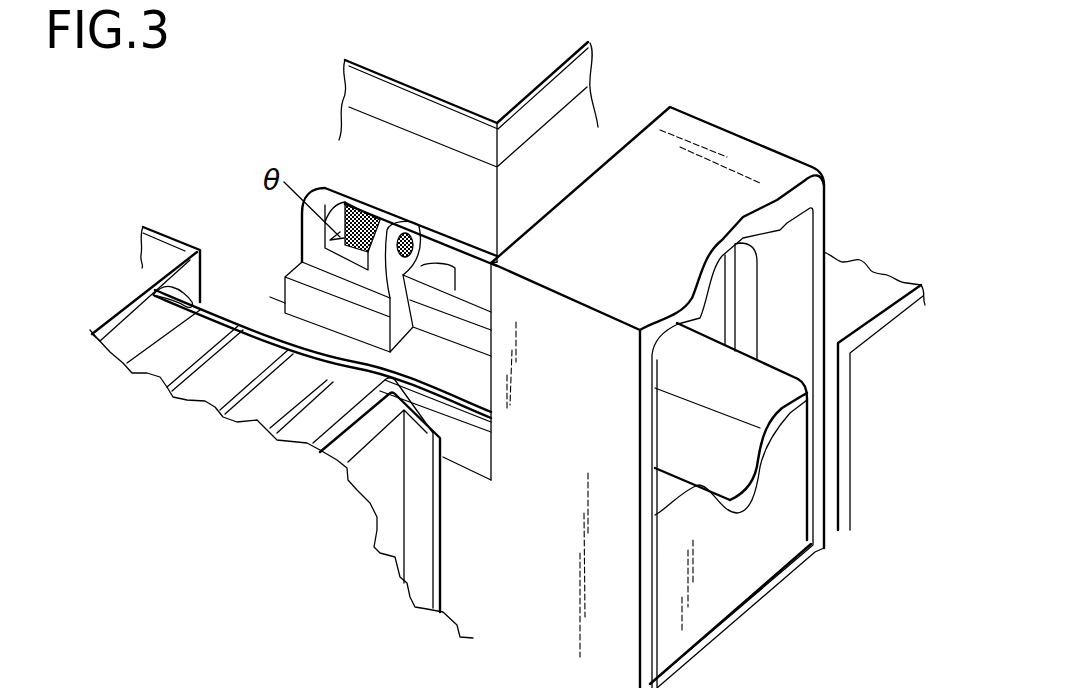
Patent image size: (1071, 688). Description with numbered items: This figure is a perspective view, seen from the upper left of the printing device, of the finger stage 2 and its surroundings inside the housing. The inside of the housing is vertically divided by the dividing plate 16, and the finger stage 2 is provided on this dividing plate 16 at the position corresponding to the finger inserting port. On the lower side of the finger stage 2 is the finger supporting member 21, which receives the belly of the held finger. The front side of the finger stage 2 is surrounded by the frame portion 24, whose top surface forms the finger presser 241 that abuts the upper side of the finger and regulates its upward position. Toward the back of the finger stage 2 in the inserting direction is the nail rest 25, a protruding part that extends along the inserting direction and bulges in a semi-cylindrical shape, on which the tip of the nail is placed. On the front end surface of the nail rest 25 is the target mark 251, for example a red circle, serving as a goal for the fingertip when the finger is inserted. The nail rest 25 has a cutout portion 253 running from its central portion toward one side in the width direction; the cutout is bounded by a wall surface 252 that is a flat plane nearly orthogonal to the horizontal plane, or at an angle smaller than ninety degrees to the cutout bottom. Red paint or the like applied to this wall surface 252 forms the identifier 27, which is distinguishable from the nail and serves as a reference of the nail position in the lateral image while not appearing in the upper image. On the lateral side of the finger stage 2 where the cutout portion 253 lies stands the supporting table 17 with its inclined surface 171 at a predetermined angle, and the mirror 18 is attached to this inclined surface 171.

The finger stage 2 is at (830, 589).
The dividing plate 16 is at (878, 285).
The supporting table 17 is at (310, 420).
The mirror 18 is at (240, 325).
The finger supporting member 21 is at (797, 482).
The frame portion 24 is at (845, 206).
The nail rest 25 is at (310, 172).
The identifier 27 is at (373, 207).
The inclined surface 171 is at (222, 303).
The finger presser 241 is at (745, 163).
The target mark 251 is at (420, 227).
The wall surface 252 is at (350, 215).
The cutout portion 253 is at (338, 243).